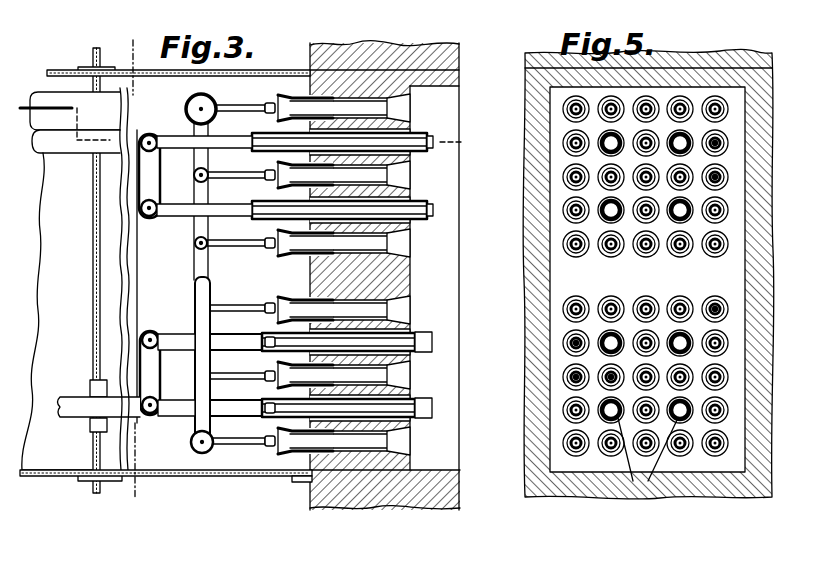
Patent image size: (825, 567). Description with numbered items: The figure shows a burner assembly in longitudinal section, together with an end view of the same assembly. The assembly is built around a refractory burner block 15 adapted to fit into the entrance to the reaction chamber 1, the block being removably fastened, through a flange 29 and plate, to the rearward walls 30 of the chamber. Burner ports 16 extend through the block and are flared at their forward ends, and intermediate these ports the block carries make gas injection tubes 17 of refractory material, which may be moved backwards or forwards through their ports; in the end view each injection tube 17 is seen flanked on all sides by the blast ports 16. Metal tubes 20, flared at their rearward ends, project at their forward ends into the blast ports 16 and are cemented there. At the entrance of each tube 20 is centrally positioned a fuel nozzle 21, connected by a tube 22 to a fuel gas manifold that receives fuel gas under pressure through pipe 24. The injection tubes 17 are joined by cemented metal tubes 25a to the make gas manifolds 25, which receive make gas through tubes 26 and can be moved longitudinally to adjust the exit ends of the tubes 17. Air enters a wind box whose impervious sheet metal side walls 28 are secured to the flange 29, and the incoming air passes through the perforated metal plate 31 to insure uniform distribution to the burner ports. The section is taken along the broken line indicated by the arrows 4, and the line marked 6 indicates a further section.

In FIG. 5, the chamber 1 is at (574, 472).
In FIG. 3, the section line 4- 4 is at (122, 33).
In FIG. 3, the section line 6- 6 is at (18, 98).
In FIG. 3, the refractory burner block 15 is at (410, 283).
In FIG. 3, the burner ports 16 is at (405, 112).
In FIG. 5, the burner ports 16 is at (718, 143).
In FIG. 3, the make gas injection tubes 17 is at (428, 139).
In FIG. 5, the make gas injection tubes 17 is at (680, 143).
In FIG. 3, the tubes 20 is at (279, 101).
In FIG. 3, the fuel nozzle 21 is at (267, 104).
In FIG. 5, the fuel nozzle 21 is at (718, 177).
In FIG. 3, the tube 22 is at (232, 172).
In FIG. 3, the pipe 24 is at (42, 95).
In FIG. 3, the make gas manifolds 25 is at (176, 273).
In FIG. 3, the metal tubes 25a is at (170, 137).
In FIG. 3, the tubes 26 is at (66, 150).
In FIG. 3, the side walls 28 is at (205, 478).
In FIG. 3, the flange 29 is at (303, 479).
In FIG. 3, the rearward walls 30 is at (370, 50).
In FIG. 3, the perforated metal plate 31 is at (97, 280).